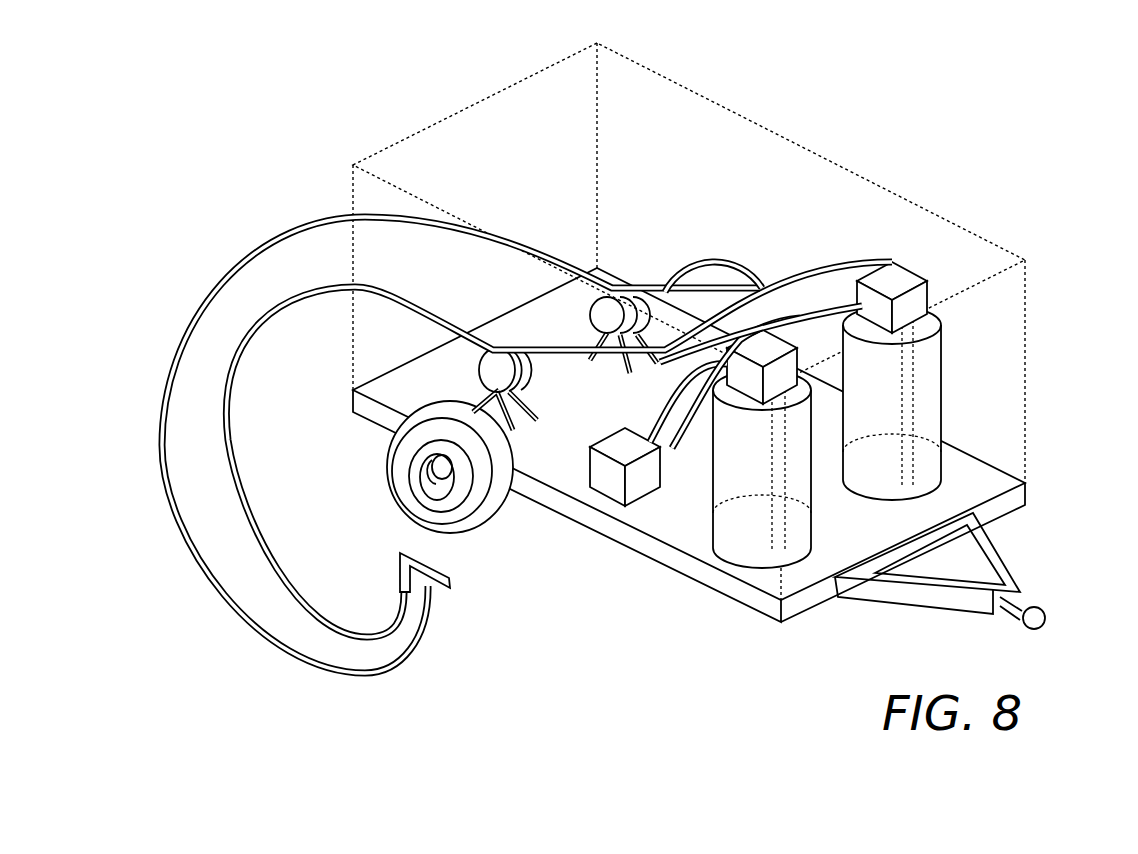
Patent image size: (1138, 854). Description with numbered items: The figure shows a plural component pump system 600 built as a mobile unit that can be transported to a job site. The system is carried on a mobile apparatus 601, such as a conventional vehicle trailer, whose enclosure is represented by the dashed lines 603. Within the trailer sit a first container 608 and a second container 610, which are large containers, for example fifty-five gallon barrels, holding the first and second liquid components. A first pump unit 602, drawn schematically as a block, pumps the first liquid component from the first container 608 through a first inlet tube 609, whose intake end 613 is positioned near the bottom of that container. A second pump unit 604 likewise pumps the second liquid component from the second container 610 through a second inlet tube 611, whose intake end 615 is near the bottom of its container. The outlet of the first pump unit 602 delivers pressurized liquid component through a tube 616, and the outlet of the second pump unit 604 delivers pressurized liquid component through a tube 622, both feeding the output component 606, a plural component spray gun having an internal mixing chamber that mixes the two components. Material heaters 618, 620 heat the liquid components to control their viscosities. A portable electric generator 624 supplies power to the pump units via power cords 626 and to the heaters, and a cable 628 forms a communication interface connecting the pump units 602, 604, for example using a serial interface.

The plural component pump system 600 is at (1028, 126).
The mobile apparatus 601 is at (1018, 516).
The first pump unit 602 is at (783, 343).
The enclosure 603 is at (1028, 262).
The second pump unit 604 is at (897, 286).
The output component 606 is at (439, 598).
The first container 608 is at (735, 489).
The first inlet tube 609 is at (713, 512).
The second container 610 is at (930, 378).
The second inlet tube 611 is at (915, 403).
The intake end 613 is at (776, 542).
The intake end 615 is at (903, 480).
The tube 616 is at (570, 349).
The material heater 618 is at (636, 288).
The material heater 620 is at (500, 344).
The tube 622 is at (835, 262).
The portable electric generator 624 is at (590, 470).
The power cords 626 is at (660, 390).
The cable 628 is at (761, 370).